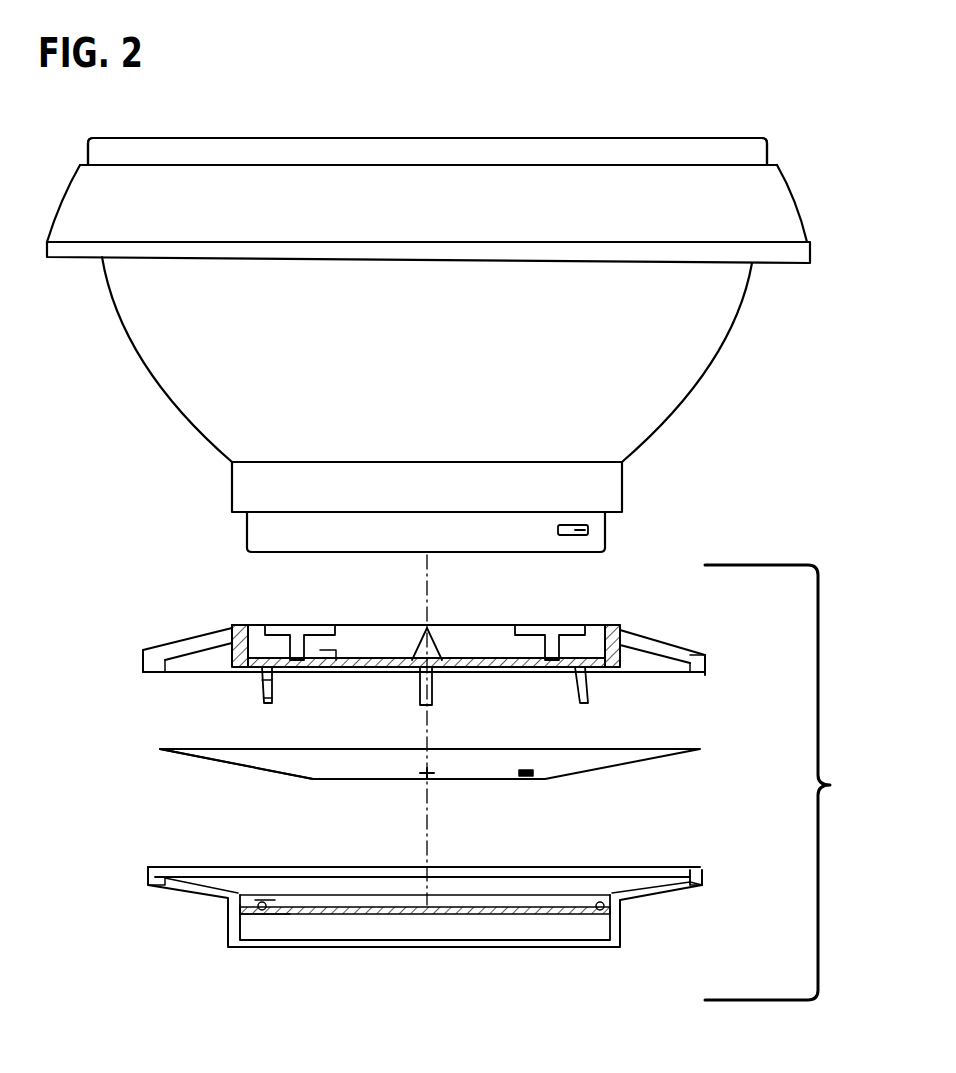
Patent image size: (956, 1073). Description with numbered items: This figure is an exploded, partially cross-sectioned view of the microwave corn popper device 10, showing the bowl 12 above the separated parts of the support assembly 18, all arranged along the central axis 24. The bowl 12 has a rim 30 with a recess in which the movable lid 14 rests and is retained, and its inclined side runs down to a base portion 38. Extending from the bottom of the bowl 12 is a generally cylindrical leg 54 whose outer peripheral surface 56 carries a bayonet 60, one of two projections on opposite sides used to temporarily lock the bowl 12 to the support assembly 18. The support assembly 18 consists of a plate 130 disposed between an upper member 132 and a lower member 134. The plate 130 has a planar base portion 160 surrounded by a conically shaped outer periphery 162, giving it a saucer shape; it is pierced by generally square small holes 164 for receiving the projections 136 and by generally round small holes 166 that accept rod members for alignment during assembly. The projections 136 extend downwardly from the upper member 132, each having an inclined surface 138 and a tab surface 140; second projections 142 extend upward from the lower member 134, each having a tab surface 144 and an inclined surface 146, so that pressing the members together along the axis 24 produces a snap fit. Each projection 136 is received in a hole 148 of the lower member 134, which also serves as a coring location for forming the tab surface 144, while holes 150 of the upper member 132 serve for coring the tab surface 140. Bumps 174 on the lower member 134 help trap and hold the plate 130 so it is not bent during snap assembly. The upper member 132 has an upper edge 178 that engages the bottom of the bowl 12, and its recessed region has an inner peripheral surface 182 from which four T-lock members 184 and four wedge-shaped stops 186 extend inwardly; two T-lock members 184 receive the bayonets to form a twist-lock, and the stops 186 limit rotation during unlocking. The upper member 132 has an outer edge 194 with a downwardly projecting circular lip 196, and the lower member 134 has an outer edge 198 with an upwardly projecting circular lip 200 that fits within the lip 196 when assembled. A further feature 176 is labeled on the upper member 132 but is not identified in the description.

The microwave corn popper device 10 is at (722, 100).
The bowl 12 is at (686, 408).
The movable lid 14 is at (513, 138).
The support assembly 18 is at (790, 782).
The axis 24 is at (424, 800).
The rim 30 is at (773, 168).
The base portion 38 is at (625, 480).
The leg 54 is at (247, 548).
The outer peripheral surface 56 is at (247, 528).
The bayonet 60 is at (588, 530).
The plate 130 is at (430, 766).
The upper member 132 is at (439, 648).
The lower member 134 is at (431, 900).
The projections 136 is at (275, 690).
The inclined surface 138 is at (262, 702).
The tab surface 140 is at (260, 696).
The second projections 142 is at (260, 902).
The tab surface 144 is at (262, 916).
The inclined surface 146 is at (268, 902).
The hole 148 is at (274, 913).
The holes 150 is at (262, 660).
The planar base portion 160 is at (465, 780).
The outer periphery 162 is at (245, 765).
The square small holes 164 is at (427, 768).
The round small holes 166 is at (527, 770).
The bumps 174 is at (165, 878).
The upper tray flange 176 is at (156, 672).
The upper edge 178 is at (612, 625).
The inner peripheral surface 182 is at (398, 625).
The T-lock members 184 is at (514, 625).
The stops 186 is at (433, 627).
The outer edge 194 is at (707, 663).
The circular lip 196 is at (705, 673).
The outer edge 198 is at (700, 884).
The circular lip 200 is at (693, 878).